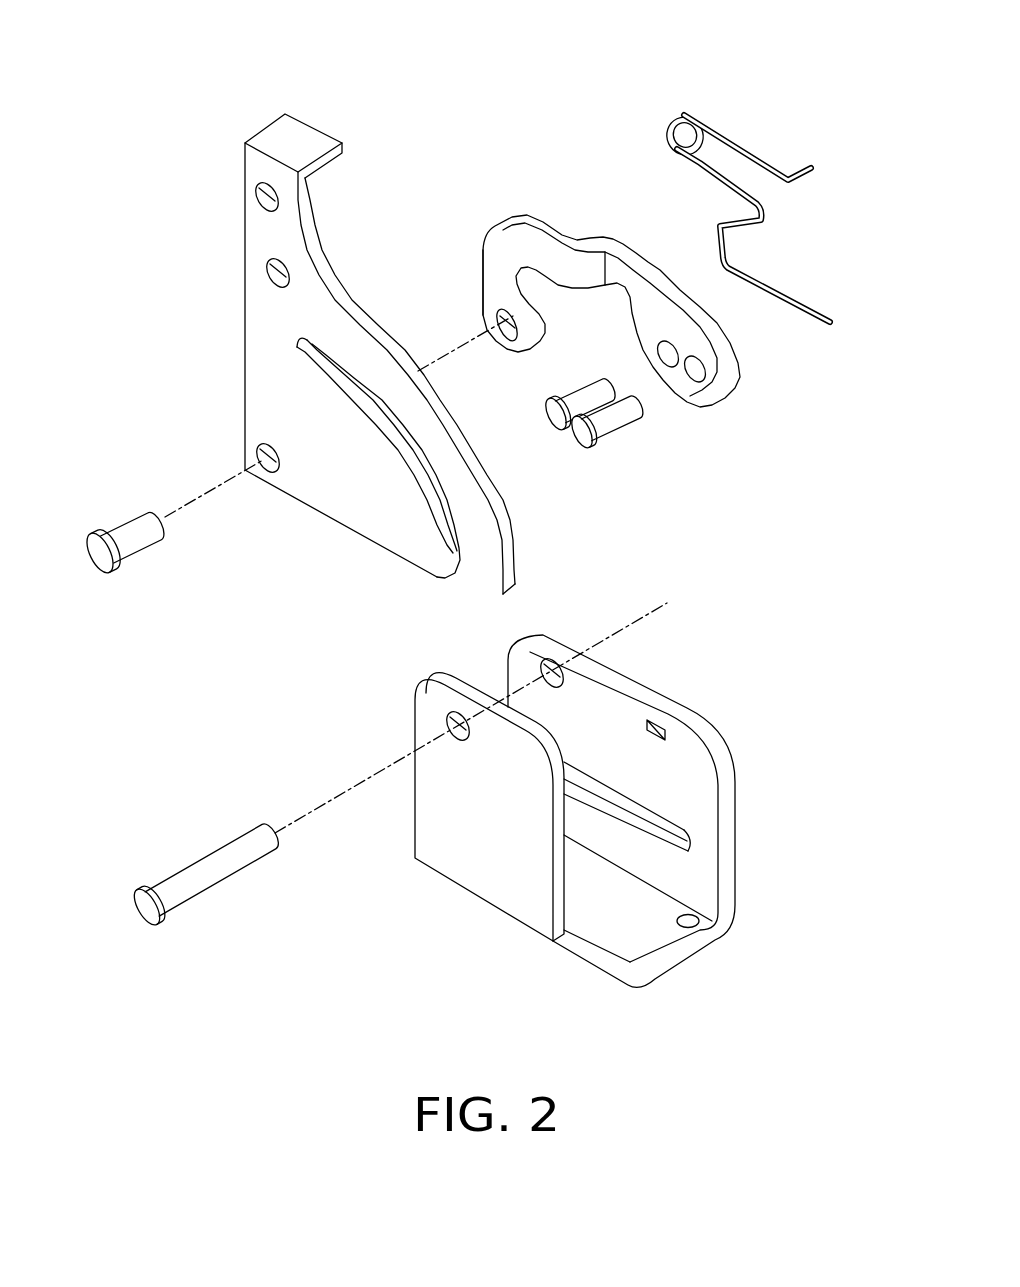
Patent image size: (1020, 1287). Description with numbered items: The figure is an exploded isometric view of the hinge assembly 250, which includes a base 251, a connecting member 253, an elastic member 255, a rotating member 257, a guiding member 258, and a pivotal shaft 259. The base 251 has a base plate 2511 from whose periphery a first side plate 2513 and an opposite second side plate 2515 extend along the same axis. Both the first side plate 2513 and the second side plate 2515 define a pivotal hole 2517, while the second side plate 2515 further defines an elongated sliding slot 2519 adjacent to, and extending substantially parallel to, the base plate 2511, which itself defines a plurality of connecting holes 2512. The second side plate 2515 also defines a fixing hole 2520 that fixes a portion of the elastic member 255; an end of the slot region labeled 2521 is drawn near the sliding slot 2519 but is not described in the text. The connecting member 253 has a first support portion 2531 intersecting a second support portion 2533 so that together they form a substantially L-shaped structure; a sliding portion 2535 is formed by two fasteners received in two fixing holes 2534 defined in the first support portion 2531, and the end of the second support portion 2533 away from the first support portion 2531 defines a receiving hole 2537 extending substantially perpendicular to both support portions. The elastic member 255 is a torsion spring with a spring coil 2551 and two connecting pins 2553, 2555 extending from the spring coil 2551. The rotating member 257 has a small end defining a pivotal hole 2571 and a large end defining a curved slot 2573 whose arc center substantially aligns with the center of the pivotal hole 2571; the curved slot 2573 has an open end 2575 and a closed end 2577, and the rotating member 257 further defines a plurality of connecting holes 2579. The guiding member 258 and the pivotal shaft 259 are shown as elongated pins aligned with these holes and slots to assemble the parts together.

The hinge assembly 250 is at (452, 62).
The base 251 is at (685, 654).
The base plate 2511 is at (651, 938).
The connecting holes 2512 is at (689, 924).
The first side plate 2513 is at (497, 865).
The second side plate 2515 is at (717, 752).
The pivotal hole 2517 is at (557, 658).
The sliding slot 2519 is at (617, 808).
The fixing hole 2520 is at (663, 726).
The hook end 2521 is at (670, 838).
The connecting member 253 is at (760, 392).
The first support portion 2531 is at (628, 253).
The second support portion 2533 is at (493, 311).
The fixing holes 2534 is at (697, 378).
The sliding portion 2535 is at (610, 422).
The receiving hole 2537 is at (510, 332).
The elastic member 255 is at (753, 119).
The spring coil 2551 is at (686, 113).
The connecting pin 2553 is at (805, 176).
The connecting pin 2555 is at (762, 217).
The rotating member 257 is at (222, 305).
The pivotal hole 2571 is at (266, 474).
The curved slot 2573 is at (390, 428).
The open end 2575 is at (452, 553).
The closed end 2577 is at (300, 348).
The connecting holes 2579 is at (257, 194).
The guiding member 258 is at (227, 862).
The pivotal shaft 259 is at (135, 537).